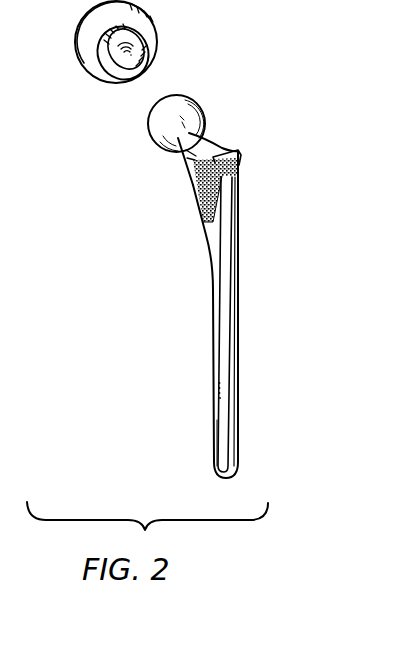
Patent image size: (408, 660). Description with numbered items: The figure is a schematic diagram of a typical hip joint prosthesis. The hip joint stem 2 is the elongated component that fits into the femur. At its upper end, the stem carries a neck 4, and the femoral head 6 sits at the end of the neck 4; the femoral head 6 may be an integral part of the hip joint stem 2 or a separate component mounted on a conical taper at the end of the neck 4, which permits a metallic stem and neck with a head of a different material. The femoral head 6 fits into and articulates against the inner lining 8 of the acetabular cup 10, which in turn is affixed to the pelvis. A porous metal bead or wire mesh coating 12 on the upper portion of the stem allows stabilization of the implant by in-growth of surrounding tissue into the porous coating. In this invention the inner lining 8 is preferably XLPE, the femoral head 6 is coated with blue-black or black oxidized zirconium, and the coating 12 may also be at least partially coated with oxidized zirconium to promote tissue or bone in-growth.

The hip joint stem 2 is at (212, 295).
The neck 4 is at (190, 158).
The femoral head 6 is at (153, 133).
The inner lining 8 is at (108, 63).
The acetabular cup 10 is at (81, 23).
The porous metal bead or wire mesh coating 12 is at (198, 200).